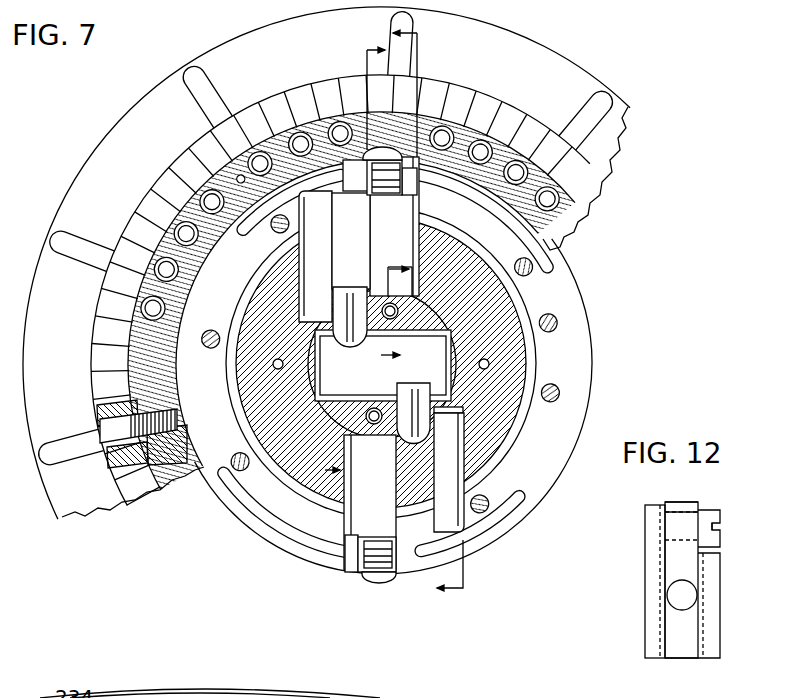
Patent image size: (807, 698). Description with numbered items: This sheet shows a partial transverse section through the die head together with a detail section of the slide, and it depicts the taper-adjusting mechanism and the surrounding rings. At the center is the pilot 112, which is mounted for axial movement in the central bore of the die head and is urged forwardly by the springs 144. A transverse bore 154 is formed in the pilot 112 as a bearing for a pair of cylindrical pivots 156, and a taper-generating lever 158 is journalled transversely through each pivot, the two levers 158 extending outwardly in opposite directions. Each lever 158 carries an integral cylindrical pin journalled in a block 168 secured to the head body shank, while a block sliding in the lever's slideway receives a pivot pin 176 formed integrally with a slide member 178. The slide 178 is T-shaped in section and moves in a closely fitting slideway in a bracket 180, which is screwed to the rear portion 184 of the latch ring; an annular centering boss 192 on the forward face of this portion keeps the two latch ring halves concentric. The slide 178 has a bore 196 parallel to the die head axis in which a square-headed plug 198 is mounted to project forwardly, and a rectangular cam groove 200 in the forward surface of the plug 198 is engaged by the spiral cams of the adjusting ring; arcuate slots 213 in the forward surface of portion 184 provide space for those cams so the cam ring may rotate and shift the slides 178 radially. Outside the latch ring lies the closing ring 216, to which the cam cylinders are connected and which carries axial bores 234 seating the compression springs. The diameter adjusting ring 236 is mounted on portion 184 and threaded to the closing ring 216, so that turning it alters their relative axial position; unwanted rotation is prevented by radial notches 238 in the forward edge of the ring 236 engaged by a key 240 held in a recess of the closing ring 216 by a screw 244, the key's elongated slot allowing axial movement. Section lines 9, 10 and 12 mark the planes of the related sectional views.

In FIG. 7, the section line 9- 9 is at (381, 258).
In FIG. 7, the section line 10- 10 is at (434, 433).
In FIG. 7, the section line 12- 12 is at (377, 201).
In FIG. 7, the pilot 112 is at (399, 279).
In FIG. 7, the springs 144 is at (393, 319).
In FIG. 7, the transverse bore 154 is at (314, 378).
In FIG. 7, the cylindrical pivots 156 is at (350, 366).
In FIG. 7, the taper-generating lever 158 is at (353, 236).
In FIG. 7, the block 168 is at (310, 253).
In FIG. 12, the pivot pin 176 is at (690, 595).
In FIG. 7, the slide member 178 is at (383, 152).
In FIG. 12, the slide member 178 is at (690, 507).
In FIG. 7, the bracket 180 is at (406, 200).
In FIG. 12, the bracket 180 is at (650, 572).
In FIG. 7, the rear portion of latch ring 184 is at (577, 313).
In FIG. 7, the annular centering boss 192 is at (248, 300).
In FIG. 12, the bore 196 is at (675, 512).
In FIG. 7, the square-headed plug 198 is at (392, 168).
In FIG. 12, the square-headed plug 198 is at (712, 517).
In FIG. 7, the cam groove 200 is at (382, 180).
In FIG. 12, the cam groove 200 is at (717, 527).
In FIG. 7, the arcuate slots 213 is at (550, 258).
In FIG. 7, the closing ring 216 is at (552, 227).
In FIG. 7, the axial bores 234 is at (293, 92).
In FIG. 7, the diameter adjusting ring 236 is at (163, 87).
In FIG. 7, the radial notches 238 is at (193, 157).
In FIG. 7, the key 240 is at (100, 410).
In FIG. 7, the screw 244 is at (107, 433).